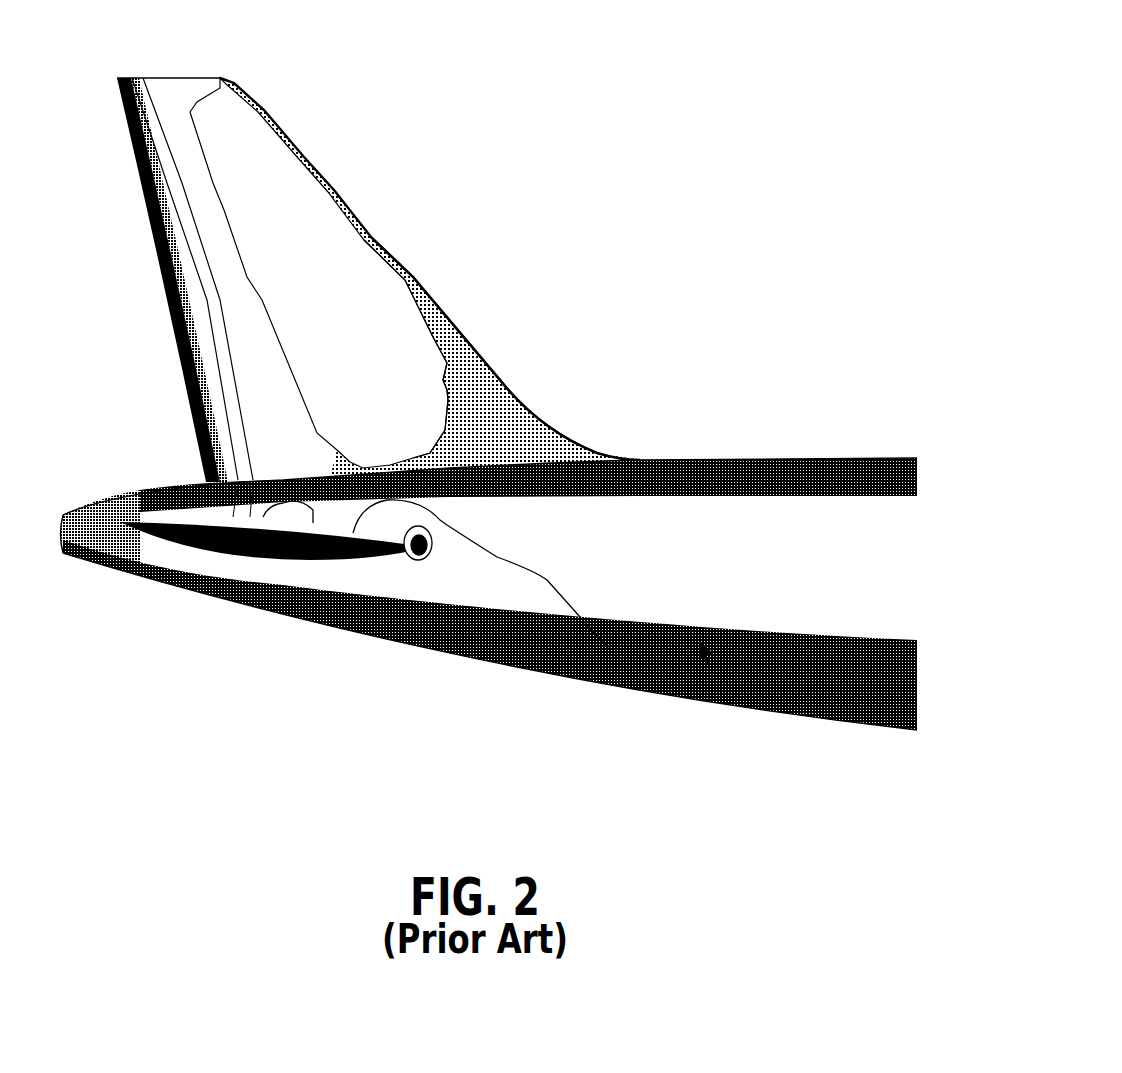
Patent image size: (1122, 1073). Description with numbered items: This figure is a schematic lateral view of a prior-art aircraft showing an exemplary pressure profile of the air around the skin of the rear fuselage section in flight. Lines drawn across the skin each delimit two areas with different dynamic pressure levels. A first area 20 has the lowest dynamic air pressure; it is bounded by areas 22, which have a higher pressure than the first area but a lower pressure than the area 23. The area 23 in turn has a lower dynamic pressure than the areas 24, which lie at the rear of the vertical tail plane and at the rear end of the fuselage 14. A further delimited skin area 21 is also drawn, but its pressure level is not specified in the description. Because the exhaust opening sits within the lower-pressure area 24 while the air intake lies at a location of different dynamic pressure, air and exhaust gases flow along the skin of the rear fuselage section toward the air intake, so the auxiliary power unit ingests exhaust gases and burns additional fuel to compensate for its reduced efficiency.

The fuselage 14 is at (732, 713).
The first area 20 is at (290, 516).
The rudder 21 is at (475, 418).
The areas 22 is at (315, 777).
The area 23 is at (143, 560).
The areas 24 is at (78, 557).